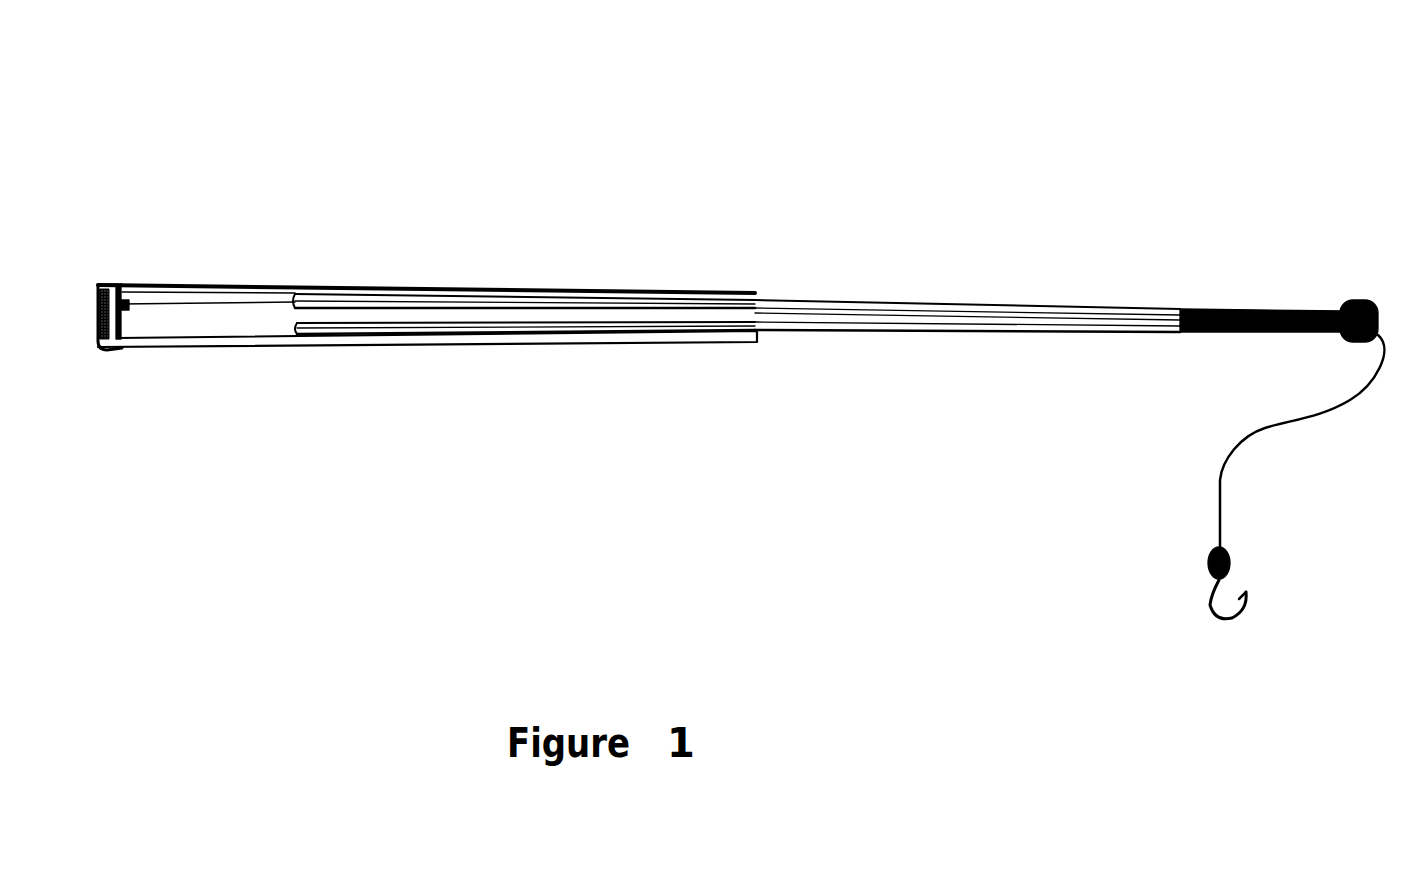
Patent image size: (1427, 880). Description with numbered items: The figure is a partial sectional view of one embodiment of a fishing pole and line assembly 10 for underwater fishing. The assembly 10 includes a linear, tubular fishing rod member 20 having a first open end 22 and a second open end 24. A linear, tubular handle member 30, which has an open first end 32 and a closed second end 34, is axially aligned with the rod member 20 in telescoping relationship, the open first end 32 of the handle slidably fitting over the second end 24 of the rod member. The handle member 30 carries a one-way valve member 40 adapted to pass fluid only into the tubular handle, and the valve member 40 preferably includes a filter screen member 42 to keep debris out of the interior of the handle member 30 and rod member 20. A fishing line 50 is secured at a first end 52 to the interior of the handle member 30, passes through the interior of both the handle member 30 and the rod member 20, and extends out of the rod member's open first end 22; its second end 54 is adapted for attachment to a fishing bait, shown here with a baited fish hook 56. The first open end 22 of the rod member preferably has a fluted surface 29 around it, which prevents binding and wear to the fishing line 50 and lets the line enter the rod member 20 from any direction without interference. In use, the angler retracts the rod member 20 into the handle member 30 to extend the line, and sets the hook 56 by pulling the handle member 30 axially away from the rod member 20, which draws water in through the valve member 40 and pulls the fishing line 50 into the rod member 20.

The fishing pole and line assembly 10 is at (922, 156).
The fishing rod member 20 is at (820, 330).
The first open end 22 is at (1387, 307).
The second open end 24 is at (300, 313).
The fluted surface 29 is at (1360, 303).
The handle member 30 is at (340, 350).
The open first end 32 is at (755, 296).
The closed second end 34 is at (112, 283).
The one-way valve member 40 is at (125, 318).
The filter screen member 42 is at (97, 285).
The fishing line 50 is at (950, 303).
The first end 52 is at (150, 283).
The second end 54 is at (1212, 497).
The fish hook 56 is at (1200, 600).